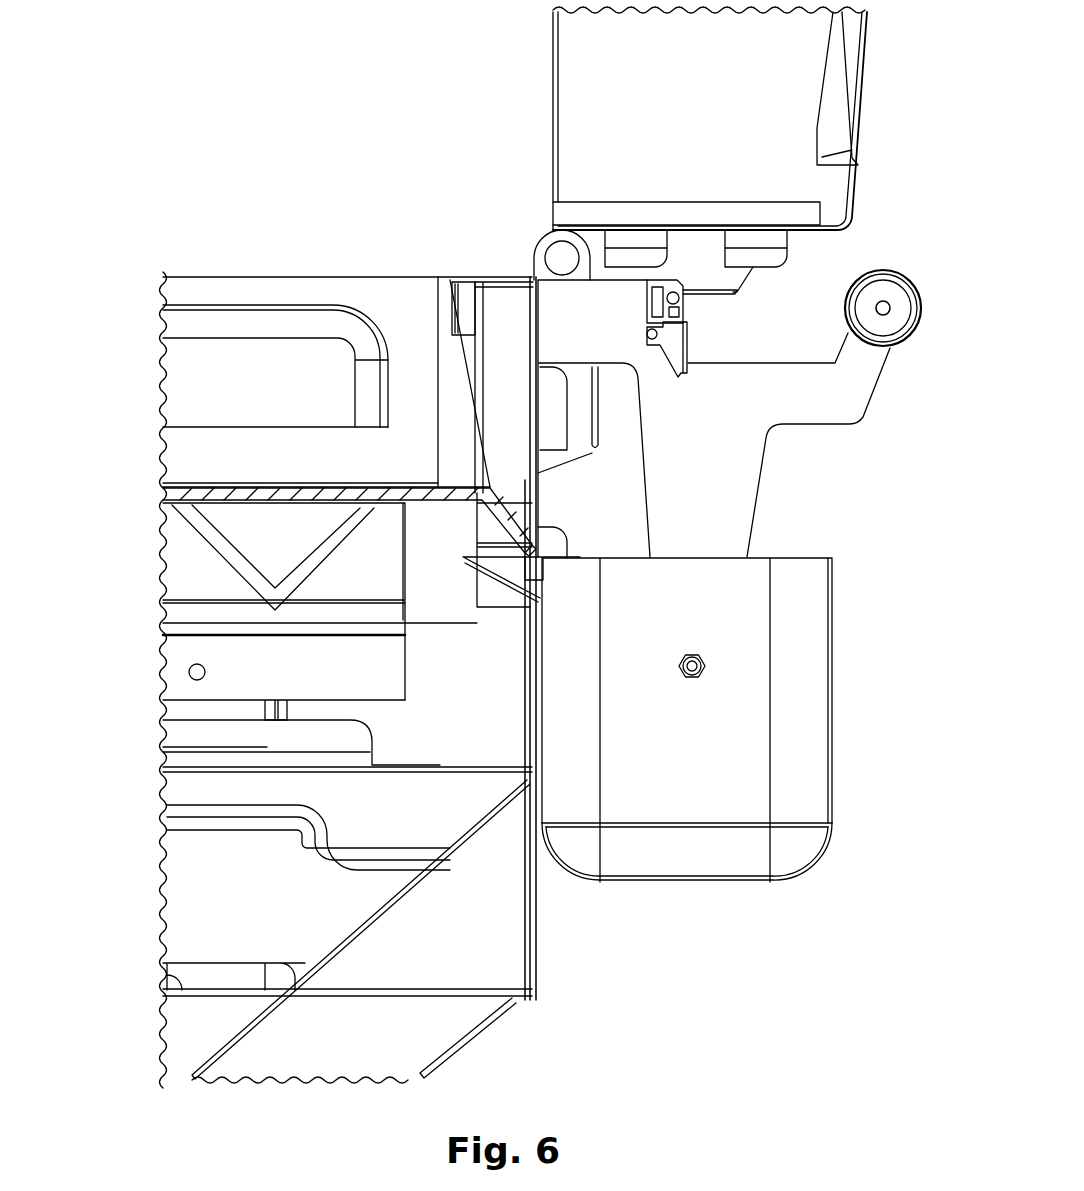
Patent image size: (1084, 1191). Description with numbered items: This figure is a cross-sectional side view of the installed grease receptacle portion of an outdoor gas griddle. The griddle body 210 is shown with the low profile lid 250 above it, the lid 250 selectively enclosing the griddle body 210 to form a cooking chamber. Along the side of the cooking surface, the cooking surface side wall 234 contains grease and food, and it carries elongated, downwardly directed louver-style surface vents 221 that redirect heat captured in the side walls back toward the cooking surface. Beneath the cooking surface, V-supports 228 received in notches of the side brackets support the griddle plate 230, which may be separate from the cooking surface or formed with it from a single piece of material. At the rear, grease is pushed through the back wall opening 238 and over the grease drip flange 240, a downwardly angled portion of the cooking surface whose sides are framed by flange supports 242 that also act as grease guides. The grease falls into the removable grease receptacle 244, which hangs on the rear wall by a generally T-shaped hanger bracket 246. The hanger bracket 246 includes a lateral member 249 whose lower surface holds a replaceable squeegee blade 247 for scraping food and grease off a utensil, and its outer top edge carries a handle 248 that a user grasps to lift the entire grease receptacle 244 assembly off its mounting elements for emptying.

The griddle body 210 is at (468, 952).
The surface vents 221 is at (243, 382).
The V-supports 228 is at (222, 547).
The griddle plate 230 is at (197, 493).
The cooking surface side wall 234 is at (198, 465).
The back wall opening 238 is at (518, 377).
The grease drip flange 240 is at (520, 515).
The flange supports 242 is at (457, 453).
The grease receptacle 244 is at (790, 753).
The hanger bracket 246 is at (848, 412).
The squeegee blade 247 is at (673, 333).
The handle 248 is at (877, 262).
The lateral member 249 is at (700, 356).
The lid 250 is at (677, 114).